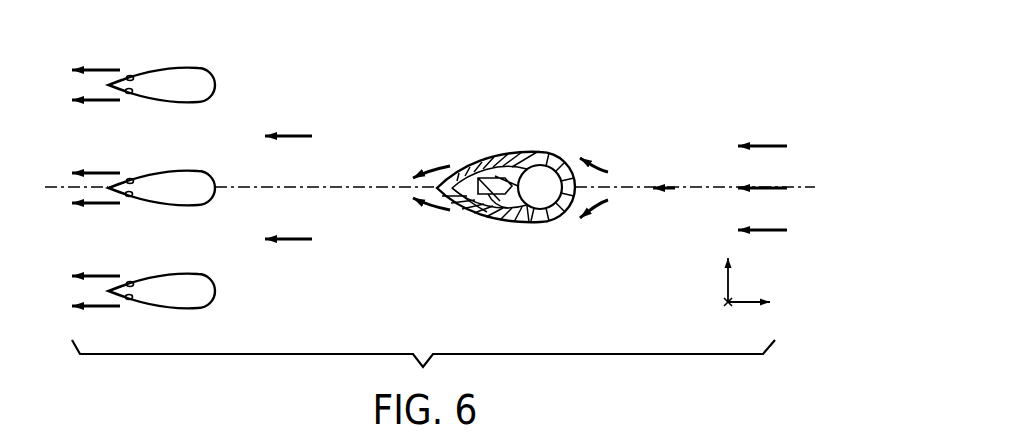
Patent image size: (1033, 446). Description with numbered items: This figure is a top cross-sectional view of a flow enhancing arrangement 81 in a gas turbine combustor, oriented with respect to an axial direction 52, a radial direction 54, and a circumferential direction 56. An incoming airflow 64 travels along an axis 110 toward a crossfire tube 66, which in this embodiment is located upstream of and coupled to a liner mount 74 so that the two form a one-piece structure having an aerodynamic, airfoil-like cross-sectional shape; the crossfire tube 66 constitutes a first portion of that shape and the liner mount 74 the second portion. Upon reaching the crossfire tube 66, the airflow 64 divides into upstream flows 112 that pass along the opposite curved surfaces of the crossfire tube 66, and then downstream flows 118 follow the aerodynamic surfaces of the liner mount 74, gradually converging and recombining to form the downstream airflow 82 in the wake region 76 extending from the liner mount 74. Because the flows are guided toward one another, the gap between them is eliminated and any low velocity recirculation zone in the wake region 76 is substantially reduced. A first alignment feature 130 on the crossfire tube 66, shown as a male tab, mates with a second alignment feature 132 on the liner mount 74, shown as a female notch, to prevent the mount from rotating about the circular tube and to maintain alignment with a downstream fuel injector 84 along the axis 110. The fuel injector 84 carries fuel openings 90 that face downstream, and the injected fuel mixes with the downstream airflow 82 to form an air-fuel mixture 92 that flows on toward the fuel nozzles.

The axial direction 52 is at (746, 301).
The radial direction 54 is at (730, 305).
The circumferential direction 56 is at (726, 300).
The airflow 64 is at (766, 144).
The crossfire tube 66 is at (558, 214).
The liner mount 74 is at (470, 215).
The second wake region 76 is at (363, 173).
The flow enhancing arrangement 81 is at (553, 122).
The downstream airflow 82 is at (294, 135).
The fuel injector 84 is at (180, 67).
The fuel opening 90 is at (128, 76).
The air-fuel mixture 92 is at (100, 101).
The axis 110 is at (810, 190).
The upstream flows 112 is at (605, 171).
The downstream flows 118 is at (446, 167).
The first alignment feature 130 is at (494, 218).
The second alignment feature 132 is at (482, 176).